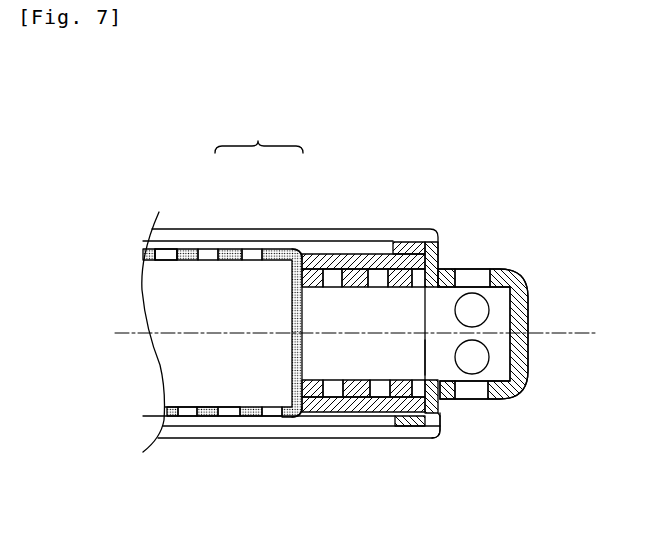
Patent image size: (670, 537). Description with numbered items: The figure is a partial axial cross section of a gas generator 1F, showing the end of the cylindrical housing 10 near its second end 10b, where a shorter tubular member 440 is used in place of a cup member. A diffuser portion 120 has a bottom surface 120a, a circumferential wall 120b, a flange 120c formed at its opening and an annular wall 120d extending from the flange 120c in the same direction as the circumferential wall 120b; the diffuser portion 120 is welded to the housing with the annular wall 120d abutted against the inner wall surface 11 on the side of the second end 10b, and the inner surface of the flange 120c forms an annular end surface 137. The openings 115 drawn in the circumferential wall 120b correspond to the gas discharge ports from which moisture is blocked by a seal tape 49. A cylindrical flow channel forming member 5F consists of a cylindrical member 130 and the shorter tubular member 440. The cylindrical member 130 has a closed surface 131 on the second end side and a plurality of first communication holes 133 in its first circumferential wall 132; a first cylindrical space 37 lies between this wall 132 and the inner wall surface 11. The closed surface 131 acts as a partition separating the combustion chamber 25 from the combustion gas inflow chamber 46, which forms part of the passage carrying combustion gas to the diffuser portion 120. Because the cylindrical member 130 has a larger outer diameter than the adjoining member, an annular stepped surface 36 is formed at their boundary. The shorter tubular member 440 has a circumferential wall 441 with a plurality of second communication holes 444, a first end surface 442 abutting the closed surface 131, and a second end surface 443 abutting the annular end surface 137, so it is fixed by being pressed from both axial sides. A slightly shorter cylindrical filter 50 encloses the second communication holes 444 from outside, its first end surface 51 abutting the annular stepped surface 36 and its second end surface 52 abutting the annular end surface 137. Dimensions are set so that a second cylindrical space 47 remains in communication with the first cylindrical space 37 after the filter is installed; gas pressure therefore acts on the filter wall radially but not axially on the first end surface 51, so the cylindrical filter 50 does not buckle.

The cylindrical housing 10 is at (205, 228).
The second end of the cylindrical housing 10b is at (442, 430).
The inner wall surface of the cylindrical housing 11 is at (178, 247).
The gas generator 1F is at (333, 226).
The cylindrical flow channel forming member 5F is at (259, 131).
The combustion chamber 25 is at (210, 310).
The annular stepped surface 36 is at (318, 418).
The first cylindrical space 37 is at (187, 418).
The combustion gas inflow chamber 46 is at (343, 318).
The second cylindrical space 47 is at (326, 417).
The seal tape 49 is at (423, 357).
The cylindrical filter 50 is at (378, 254).
The first end surface of the cylindrical filter 51 is at (290, 265).
The second end surface of the cylindrical filter 52 is at (445, 266).
The opening 115 is at (470, 393).
The diffuser portion 120 is at (533, 288).
The bottom surface of the diffuser portion 120a is at (530, 357).
The circumferential wall of the diffuser portion 120b is at (497, 270).
The flange of the diffuser portion 120c is at (440, 262).
The annular wall of the diffuser portion 120d is at (415, 242).
The cylindrical member 130 is at (228, 249).
The closed surface of the cylindrical member 131 is at (290, 343).
The first circumferential wall 132 is at (233, 416).
The first communication holes 133 is at (207, 406).
The annular end surface 137 is at (424, 297).
The shorter tubular member 440 is at (310, 260).
The circumferential wall of the shorter tubular member 441 is at (360, 402).
The first end surface of the shorter tubular member 442 is at (292, 381).
The second end surface of the shorter tubular member 443 is at (442, 405).
The second communication holes 444 is at (332, 388).